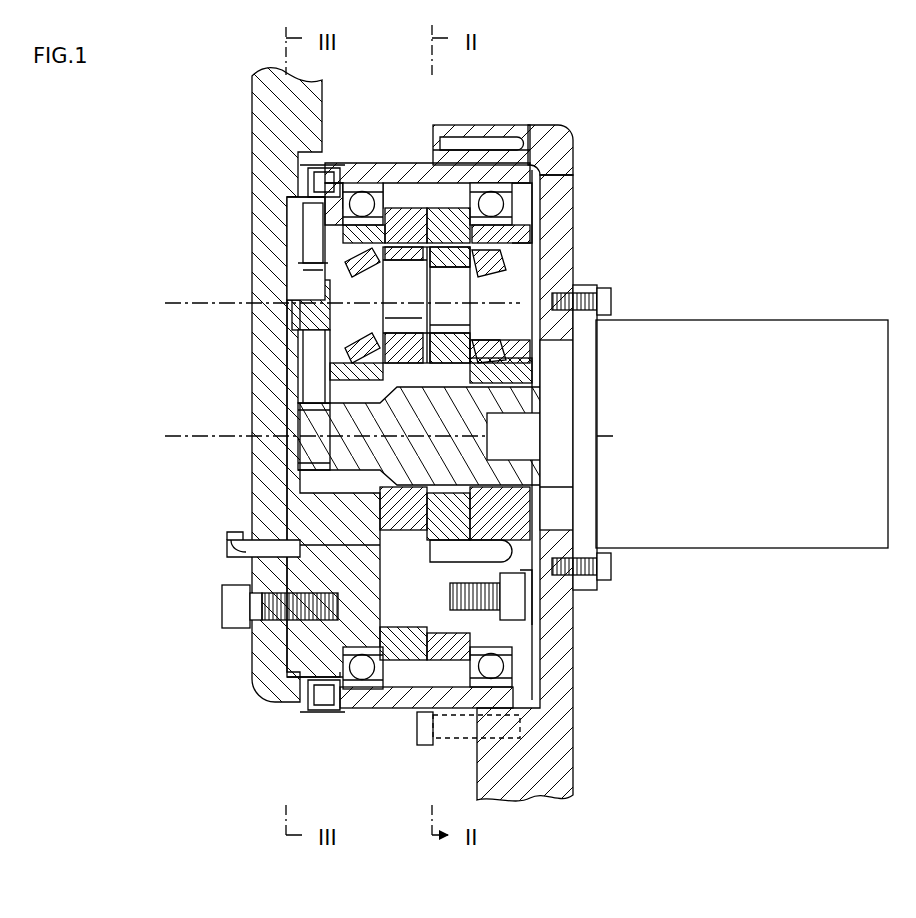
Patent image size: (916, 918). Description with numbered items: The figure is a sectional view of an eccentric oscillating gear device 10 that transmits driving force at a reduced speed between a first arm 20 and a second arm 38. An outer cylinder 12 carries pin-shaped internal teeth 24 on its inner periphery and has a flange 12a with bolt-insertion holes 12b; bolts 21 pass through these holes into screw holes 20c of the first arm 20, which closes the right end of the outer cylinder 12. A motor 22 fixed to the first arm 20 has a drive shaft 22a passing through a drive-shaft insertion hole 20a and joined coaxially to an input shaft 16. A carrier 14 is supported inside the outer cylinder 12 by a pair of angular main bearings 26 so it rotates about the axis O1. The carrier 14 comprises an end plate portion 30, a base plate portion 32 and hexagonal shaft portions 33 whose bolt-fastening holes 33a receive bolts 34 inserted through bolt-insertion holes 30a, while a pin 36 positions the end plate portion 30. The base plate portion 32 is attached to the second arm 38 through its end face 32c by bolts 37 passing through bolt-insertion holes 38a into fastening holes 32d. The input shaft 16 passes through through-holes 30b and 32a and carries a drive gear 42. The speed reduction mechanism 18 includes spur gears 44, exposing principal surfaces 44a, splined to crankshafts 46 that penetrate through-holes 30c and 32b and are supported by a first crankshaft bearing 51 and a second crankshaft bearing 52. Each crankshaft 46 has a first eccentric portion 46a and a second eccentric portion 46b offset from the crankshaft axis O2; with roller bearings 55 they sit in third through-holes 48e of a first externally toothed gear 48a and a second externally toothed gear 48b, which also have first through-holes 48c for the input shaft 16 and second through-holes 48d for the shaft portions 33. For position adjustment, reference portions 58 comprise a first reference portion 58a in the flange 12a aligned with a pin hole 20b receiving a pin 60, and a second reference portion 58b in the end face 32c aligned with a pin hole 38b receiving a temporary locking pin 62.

The eccentric oscillating gear device 10 is at (579, 118).
The outer cylinder 12 is at (343, 160).
The flange 12a is at (470, 123).
The bolt-insertion hole 12b is at (450, 748).
The carrier 14 is at (535, 196).
The input shaft 16 is at (457, 428).
The speed reduction mechanism 18 is at (522, 290).
The first arm 20 is at (557, 488).
The drive-shaft insertion hole 20a is at (550, 530).
The pin hole 20b is at (525, 127).
The screw hole 20c is at (523, 722).
The bolt 21 is at (417, 730).
The motor 22 is at (740, 318).
The drive shaft 22a is at (513, 407).
The internal tooth 24 is at (483, 183).
The main bearing 26 is at (510, 195).
The end plate portion 30 is at (537, 200).
The bolt-insertion hole 30a is at (525, 585).
The through-hole 30b is at (545, 500).
The through-hole 30c is at (527, 357).
The base plate portion 32 is at (261, 478).
The through-hole 32a is at (320, 487).
The through-hole 32b is at (313, 355).
The end face 32c is at (350, 513).
The fastening hole 32d is at (307, 623).
The shaft portion 33 is at (300, 518).
The bolt-fastening hole 33a is at (500, 607).
The bolt 34 is at (520, 600).
The pin 36 is at (577, 527).
The bolt 37 is at (225, 600).
The second arm 38 is at (252, 142).
The bolt-insertion hole 38a is at (257, 612).
The pin hole 38b is at (211, 561).
The drive gear 42 is at (320, 388).
The spur gear 44 is at (235, 248).
The principal surface 44a is at (305, 230).
The crankshaft 46 is at (513, 315).
The first eccentric portion 46a is at (450, 313).
The second eccentric portion 46b is at (405, 306).
The first externally toothed gear 48a is at (450, 213).
The second externally toothed gear 48b is at (403, 225).
The first through-hole 48c is at (335, 433).
The second through-hole 48d is at (443, 635).
The third through-hole 48e is at (520, 268).
The first crankshaft bearing 51 is at (533, 243).
The second crankshaft bearing 52 is at (325, 262).
The roller bearing 55 is at (508, 237).
The reference portion 58 is at (418, 314).
The first reference portion 58a is at (432, 142).
The second reference portion 58b is at (312, 548).
The pin 60 is at (447, 145).
The temporary locking pin 62 is at (240, 560).
The axis O1 is at (165, 436).
The crankshaft axis O2 is at (165, 303).